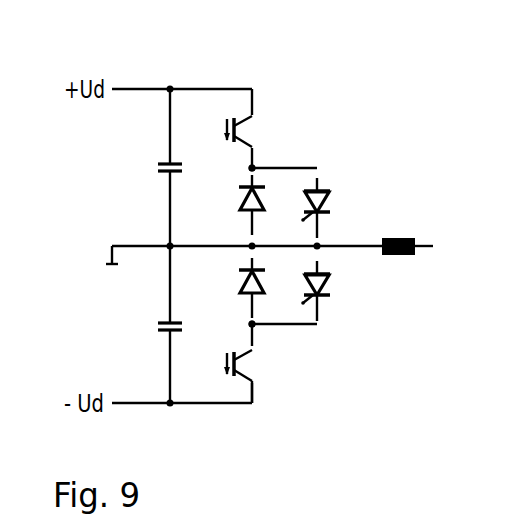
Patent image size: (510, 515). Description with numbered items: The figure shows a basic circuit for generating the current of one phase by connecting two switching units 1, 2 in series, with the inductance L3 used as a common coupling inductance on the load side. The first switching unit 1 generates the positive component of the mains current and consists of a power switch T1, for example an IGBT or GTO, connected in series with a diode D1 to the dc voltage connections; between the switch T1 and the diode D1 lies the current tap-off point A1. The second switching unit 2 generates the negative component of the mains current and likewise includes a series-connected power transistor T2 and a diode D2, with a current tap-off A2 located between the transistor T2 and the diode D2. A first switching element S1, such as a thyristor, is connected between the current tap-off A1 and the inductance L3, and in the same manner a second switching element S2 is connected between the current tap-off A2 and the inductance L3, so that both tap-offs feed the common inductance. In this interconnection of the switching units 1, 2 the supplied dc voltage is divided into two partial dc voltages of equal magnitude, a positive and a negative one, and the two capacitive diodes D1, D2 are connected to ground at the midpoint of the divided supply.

The switching unit 1 is at (277, 114).
The switching unit 2 is at (277, 385).
The current tap-off point A1 is at (260, 160).
The current tap-off A2 is at (258, 330).
The power switch T1 is at (221, 131).
The power transistor T2 is at (221, 365).
The diode D1 is at (234, 205).
The diode D2 is at (234, 288).
The first switching element S1 is at (331, 208).
The second switching element S2 is at (331, 291).
The inductance L3 is at (398, 260).